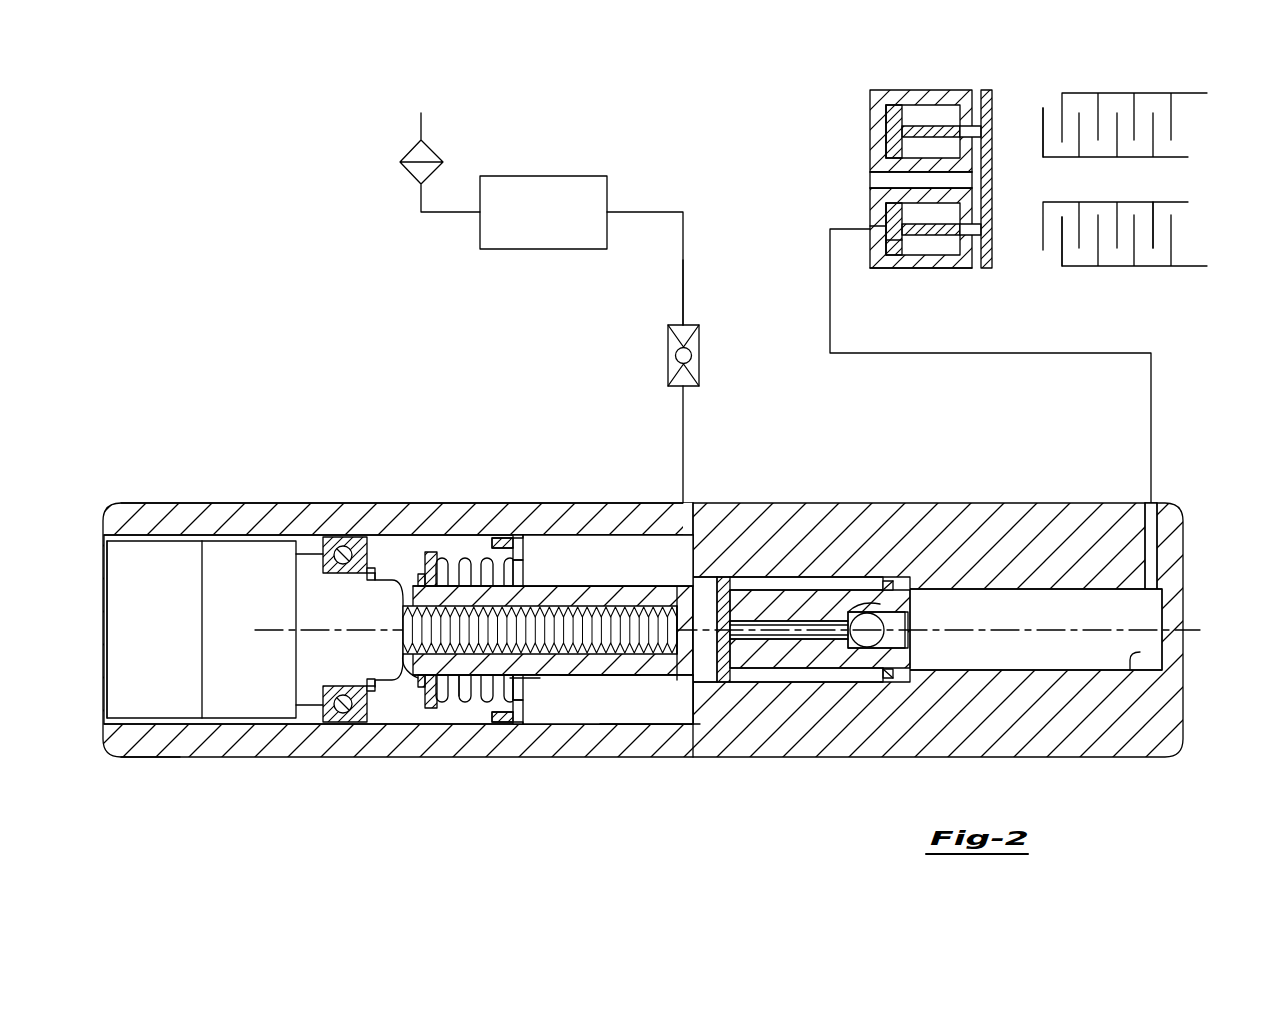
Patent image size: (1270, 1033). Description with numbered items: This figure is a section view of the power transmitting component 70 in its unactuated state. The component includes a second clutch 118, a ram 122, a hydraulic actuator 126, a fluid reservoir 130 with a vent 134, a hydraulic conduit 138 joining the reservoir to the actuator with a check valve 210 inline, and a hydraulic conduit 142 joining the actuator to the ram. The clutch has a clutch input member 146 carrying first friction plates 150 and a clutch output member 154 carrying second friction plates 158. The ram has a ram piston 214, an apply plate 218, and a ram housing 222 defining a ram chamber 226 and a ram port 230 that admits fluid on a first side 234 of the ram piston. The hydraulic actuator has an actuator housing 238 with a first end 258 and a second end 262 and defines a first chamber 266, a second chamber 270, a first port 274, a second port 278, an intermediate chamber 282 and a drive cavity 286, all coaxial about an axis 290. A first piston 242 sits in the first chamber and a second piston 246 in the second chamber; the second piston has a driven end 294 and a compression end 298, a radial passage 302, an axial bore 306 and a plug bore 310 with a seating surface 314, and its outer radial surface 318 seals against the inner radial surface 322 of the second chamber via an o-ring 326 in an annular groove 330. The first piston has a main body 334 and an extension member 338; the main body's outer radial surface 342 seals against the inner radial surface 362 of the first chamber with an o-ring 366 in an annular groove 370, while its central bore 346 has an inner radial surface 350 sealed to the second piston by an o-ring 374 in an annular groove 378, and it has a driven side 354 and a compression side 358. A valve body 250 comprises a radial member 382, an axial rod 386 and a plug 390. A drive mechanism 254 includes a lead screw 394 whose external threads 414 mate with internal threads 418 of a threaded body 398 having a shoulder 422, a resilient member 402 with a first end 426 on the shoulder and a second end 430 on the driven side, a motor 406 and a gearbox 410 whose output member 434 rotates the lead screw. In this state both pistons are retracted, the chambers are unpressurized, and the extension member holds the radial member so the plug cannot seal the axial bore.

The power transmitting component 70 is at (230, 193).
The second clutch 118 is at (1135, 90).
The ram 122 is at (868, 92).
The hydraulic actuator 126 is at (148, 760).
The fluid reservoir 130 is at (543, 176).
The vent 134 is at (400, 150).
The hydraulic conduit 138 is at (683, 215).
The hydraulic conduit 142 is at (830, 297).
The clutch input member 146 is at (1153, 268).
The first friction plates 150 is at (1062, 240).
The clutch output member 154 is at (1140, 203).
The second friction plates 158 is at (1043, 135).
The valve 210 is at (668, 350).
The ram piston 214 is at (895, 110).
The apply plate 218 is at (986, 92).
The ram housing 222 is at (962, 270).
The ram chamber 226 is at (882, 206).
The ram port 230 is at (870, 226).
The first side 234 is at (886, 243).
The actuator housing 238 is at (152, 503).
The first piston 242 is at (494, 702).
The second piston 246 is at (830, 668).
The valve body 250 is at (780, 668).
The drive mechanism 254 is at (410, 552).
The first end 258 is at (107, 684).
The second end 262 is at (1185, 688).
The first chamber 266 is at (672, 715).
The second chamber 270 is at (1135, 610).
The first port 274 is at (1165, 540).
The second port 278 is at (700, 516).
The intermediate chamber 282 is at (745, 590).
The drive cavity 286 is at (310, 554).
The axis 290 is at (275, 628).
The driven end 294 is at (690, 705).
The compression end 298 is at (905, 598).
The radial passage 302 is at (725, 682).
The axial bore 306 is at (810, 622).
The plug bore 310 is at (905, 610).
The seating surface 314 is at (872, 682).
The outer radial surface 318 is at (810, 590).
The inner radial surface 322 is at (1132, 654).
The o-ring 326 is at (888, 581).
The annular groove 330 is at (893, 676).
The main body 334 is at (522, 562).
The extension member 338 is at (635, 700).
The outer radial surface 342 is at (486, 560).
The central bore 346 is at (463, 560).
The inner radial surface 350 is at (560, 606).
The driven side 354 is at (512, 712).
The compression side 358 is at (522, 712).
The inner radial surface 362 is at (620, 535).
The o-ring 366 is at (520, 538).
The annular groove 370 is at (525, 535).
The o-ring 374 is at (530, 672).
The annular groove 378 is at (520, 676).
The radial member 382 is at (745, 577).
The axial rod 386 is at (795, 645).
The plug 390 is at (880, 634).
The lead screw 394 is at (636, 618).
The threaded body 398 is at (600, 700).
The resilient member 402 is at (462, 700).
The motor 406 is at (130, 560).
The gearbox 410 is at (212, 560).
The external threads 414 is at (632, 675).
The internal threads 418 is at (674, 604).
The shoulder 422 is at (405, 678).
The first end 426 is at (440, 697).
The second end 430 is at (518, 690).
The output member 434 is at (398, 570).